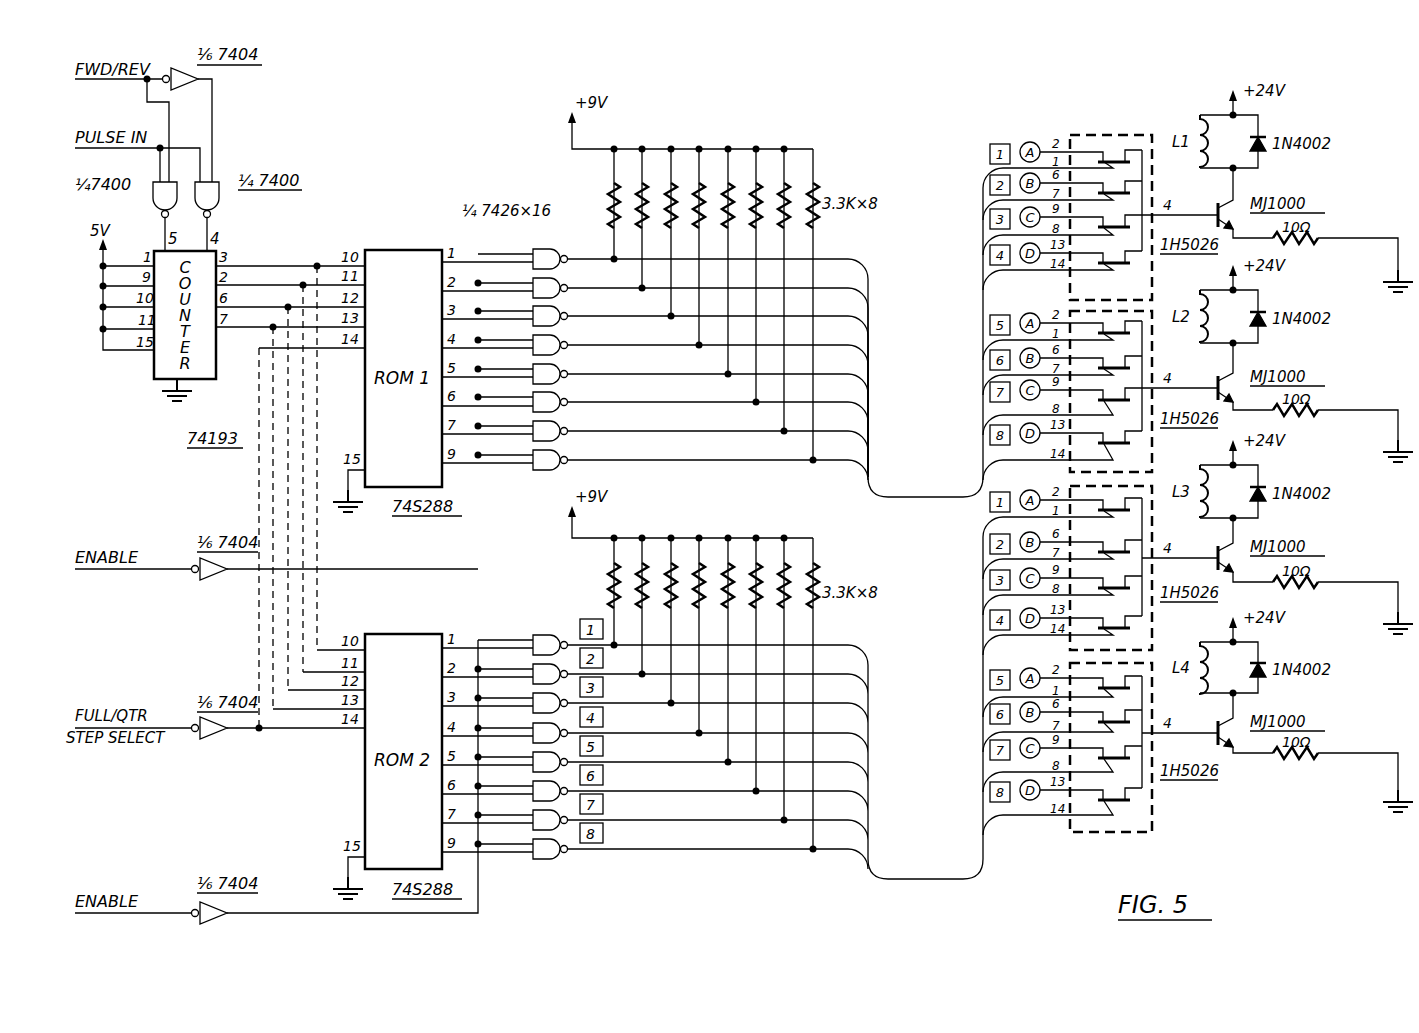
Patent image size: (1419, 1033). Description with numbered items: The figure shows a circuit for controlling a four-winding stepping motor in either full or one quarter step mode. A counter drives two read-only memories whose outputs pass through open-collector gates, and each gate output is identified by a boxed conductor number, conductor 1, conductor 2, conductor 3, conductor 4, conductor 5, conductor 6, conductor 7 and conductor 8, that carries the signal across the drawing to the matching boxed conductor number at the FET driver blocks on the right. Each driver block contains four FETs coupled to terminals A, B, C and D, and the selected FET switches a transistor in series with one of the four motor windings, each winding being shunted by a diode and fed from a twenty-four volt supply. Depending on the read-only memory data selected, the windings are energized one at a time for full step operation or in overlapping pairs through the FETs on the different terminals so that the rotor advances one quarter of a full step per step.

The output conductor 1 is at (718, 355).
The output conductor 2 is at (718, 369).
The output conductor 3 is at (718, 383).
The output conductor 4 is at (718, 398).
The output conductor 5 is at (718, 412).
The output conductor 6 is at (718, 426).
The output conductor 7 is at (718, 441).
The output conductor 8 is at (718, 457).